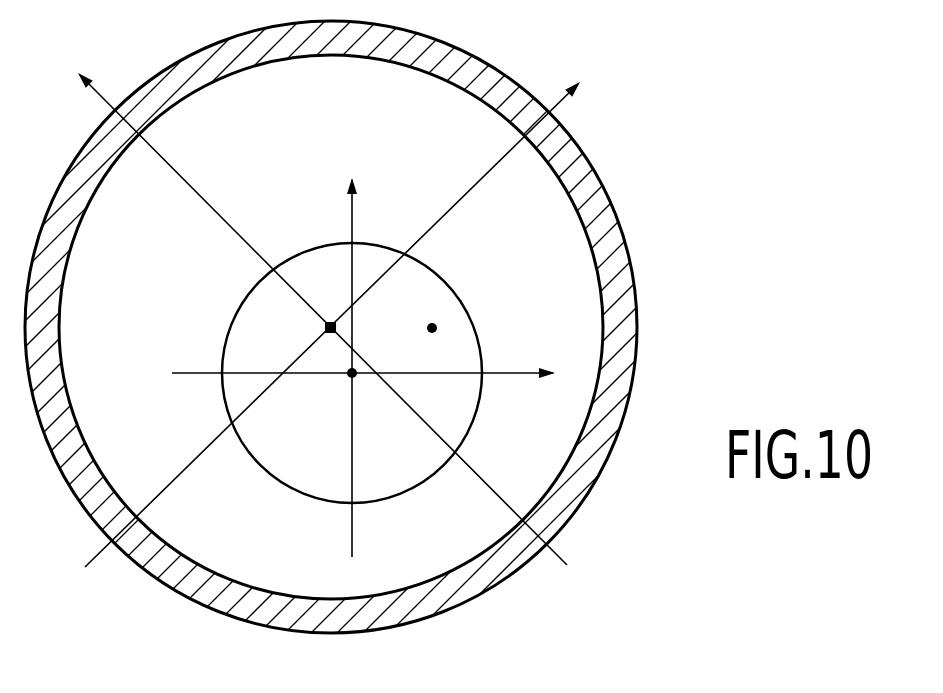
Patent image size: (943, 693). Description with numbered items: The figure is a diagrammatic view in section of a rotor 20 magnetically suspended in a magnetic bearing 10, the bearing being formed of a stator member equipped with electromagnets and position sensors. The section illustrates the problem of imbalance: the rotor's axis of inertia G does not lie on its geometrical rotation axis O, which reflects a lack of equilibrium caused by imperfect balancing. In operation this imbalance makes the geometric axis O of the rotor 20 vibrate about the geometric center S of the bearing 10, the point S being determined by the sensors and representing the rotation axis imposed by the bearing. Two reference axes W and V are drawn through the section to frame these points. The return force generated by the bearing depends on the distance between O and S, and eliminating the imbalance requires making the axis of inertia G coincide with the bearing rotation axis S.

The magnetic bearing 10 is at (603, 226).
The rotor 20 is at (311, 497).
The W axis W is at (308, 303).
The V axis V is at (343, 309).
The geometric center of the bearing S is at (328, 301).
The geometrical rotation axis of the rotor O is at (340, 393).
The axis of inertia of the rotor G is at (431, 310).